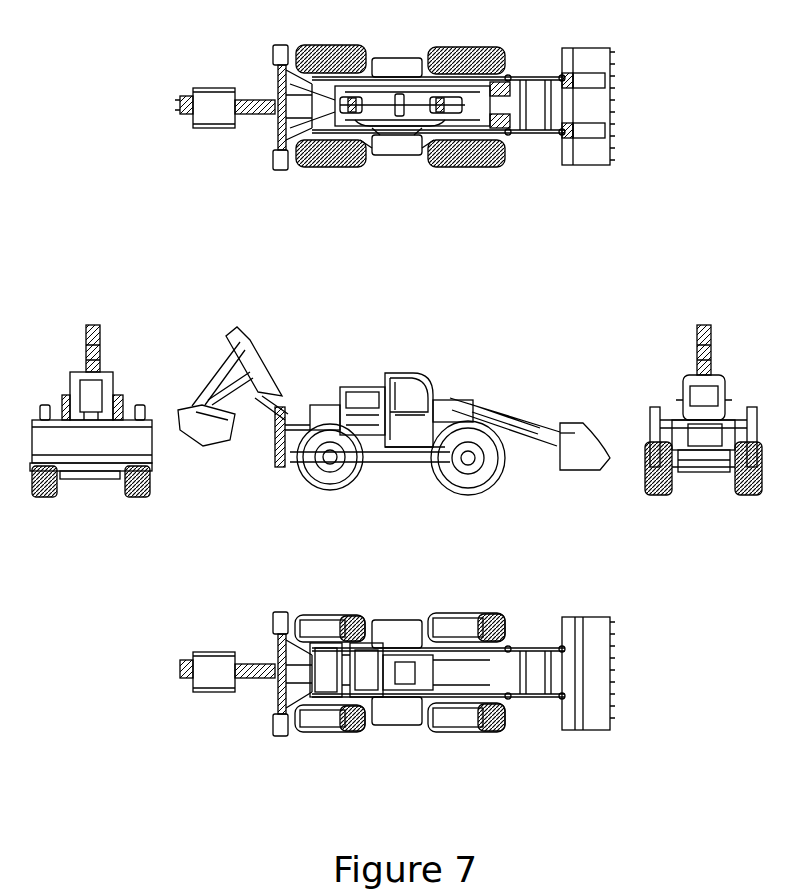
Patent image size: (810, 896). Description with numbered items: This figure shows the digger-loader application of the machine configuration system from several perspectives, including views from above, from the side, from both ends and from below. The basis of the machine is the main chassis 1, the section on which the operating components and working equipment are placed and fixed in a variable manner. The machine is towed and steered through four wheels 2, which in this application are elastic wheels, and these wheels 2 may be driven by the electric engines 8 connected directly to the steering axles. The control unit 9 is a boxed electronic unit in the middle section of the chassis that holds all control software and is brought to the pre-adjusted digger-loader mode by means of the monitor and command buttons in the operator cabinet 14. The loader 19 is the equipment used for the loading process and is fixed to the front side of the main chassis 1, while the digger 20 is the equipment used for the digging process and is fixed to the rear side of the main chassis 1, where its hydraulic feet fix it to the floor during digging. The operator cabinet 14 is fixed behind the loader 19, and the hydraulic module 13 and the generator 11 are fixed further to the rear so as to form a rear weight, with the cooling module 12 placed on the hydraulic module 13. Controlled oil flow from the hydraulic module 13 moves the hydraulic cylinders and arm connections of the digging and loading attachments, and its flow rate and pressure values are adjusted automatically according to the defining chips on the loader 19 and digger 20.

The main chassis 1 is at (307, 96).
The wheels 2 is at (488, 168).
The electric engine 8 is at (372, 155).
The control unit 9 is at (396, 95).
The generator 11 is at (325, 660).
The cooling module 12 is at (368, 665).
The hydraulic module 13 is at (385, 468).
The operator cabinet 14 is at (437, 407).
The loader 19 is at (592, 63).
The digger 20 is at (207, 116).